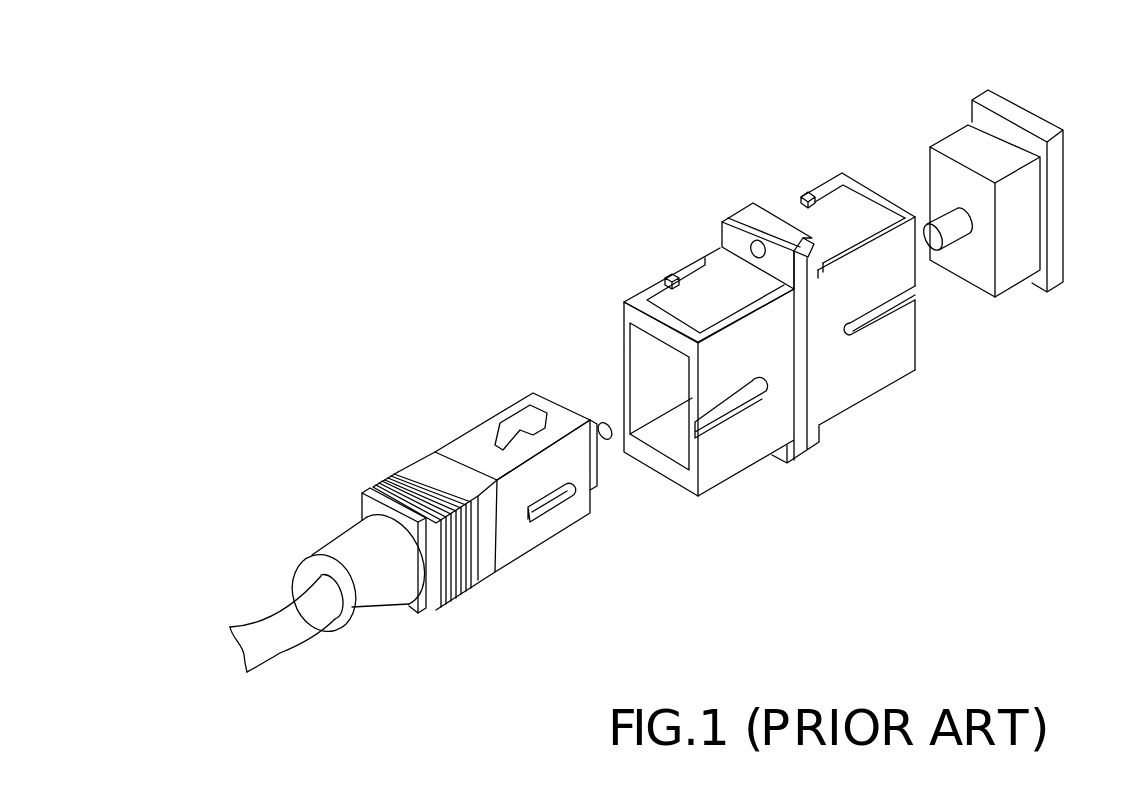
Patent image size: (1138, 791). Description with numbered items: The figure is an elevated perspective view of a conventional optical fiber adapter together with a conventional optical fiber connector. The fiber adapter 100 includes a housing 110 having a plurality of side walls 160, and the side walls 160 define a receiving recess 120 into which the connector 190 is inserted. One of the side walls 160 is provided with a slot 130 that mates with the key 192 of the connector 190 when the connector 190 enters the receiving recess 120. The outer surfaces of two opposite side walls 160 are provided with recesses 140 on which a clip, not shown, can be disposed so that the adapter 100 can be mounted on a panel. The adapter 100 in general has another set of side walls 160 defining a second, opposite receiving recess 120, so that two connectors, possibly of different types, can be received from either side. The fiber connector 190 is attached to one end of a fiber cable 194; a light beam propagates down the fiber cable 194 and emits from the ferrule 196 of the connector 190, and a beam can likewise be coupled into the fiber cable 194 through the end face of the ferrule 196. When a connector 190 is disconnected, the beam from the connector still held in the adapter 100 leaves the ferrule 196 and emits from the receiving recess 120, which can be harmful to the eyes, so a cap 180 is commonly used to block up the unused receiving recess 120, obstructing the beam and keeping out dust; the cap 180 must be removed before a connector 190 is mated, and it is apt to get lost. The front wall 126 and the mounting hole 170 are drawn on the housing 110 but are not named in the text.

The fiber adapter 100 is at (683, 124).
The housing 110 is at (617, 272).
The receiving recess 120 is at (653, 463).
The front wall 126 is at (628, 314).
The slot 130 is at (887, 307).
The recess 140 is at (811, 217).
The side wall 160 is at (880, 191).
The mounting hole 170 is at (676, 258).
The cap 180 is at (1050, 107).
The connector 190 is at (393, 424).
The key 192 is at (553, 510).
The fiber cable 194 is at (288, 612).
The ferrule 196 is at (598, 422).